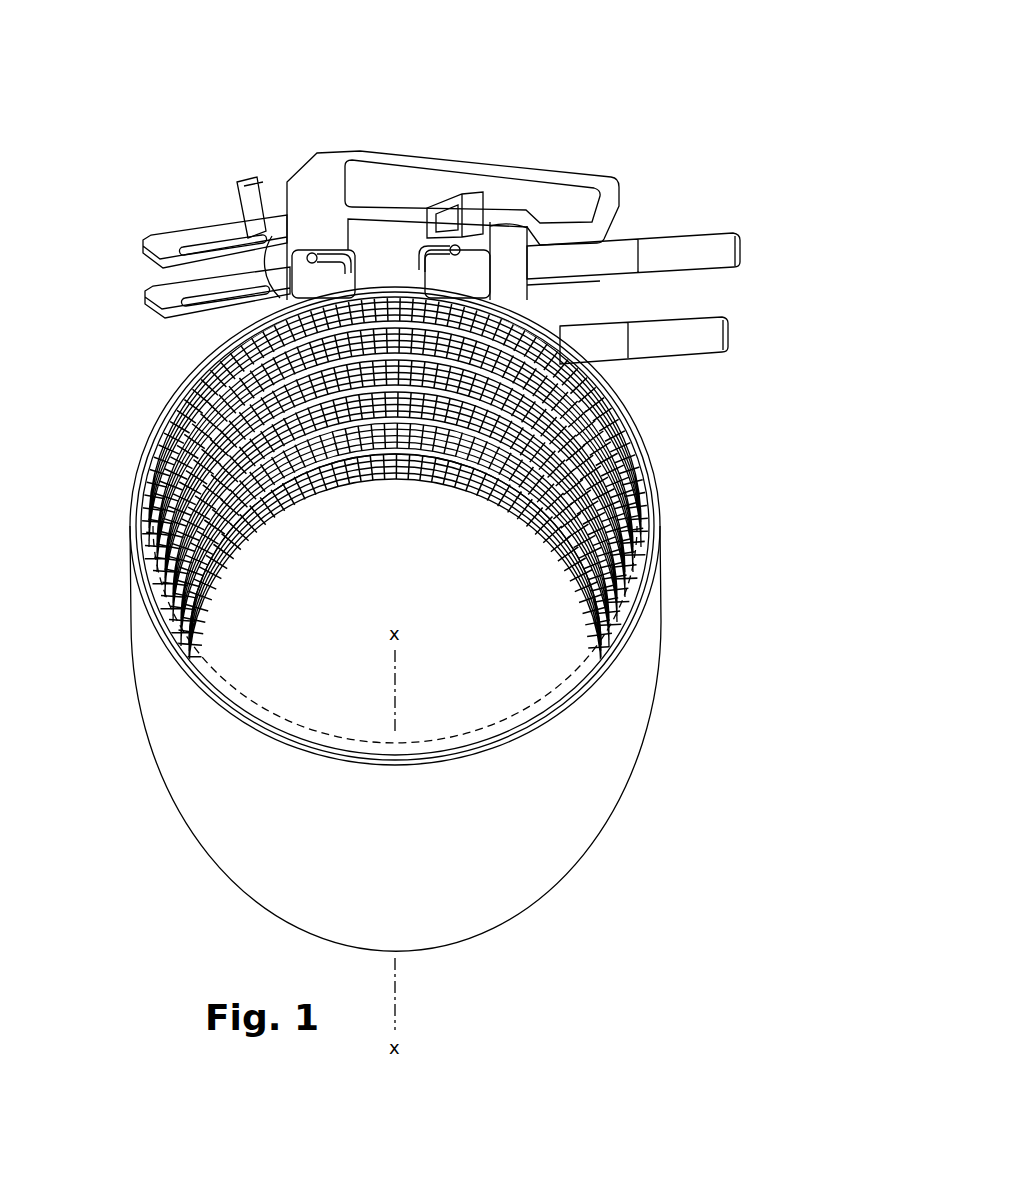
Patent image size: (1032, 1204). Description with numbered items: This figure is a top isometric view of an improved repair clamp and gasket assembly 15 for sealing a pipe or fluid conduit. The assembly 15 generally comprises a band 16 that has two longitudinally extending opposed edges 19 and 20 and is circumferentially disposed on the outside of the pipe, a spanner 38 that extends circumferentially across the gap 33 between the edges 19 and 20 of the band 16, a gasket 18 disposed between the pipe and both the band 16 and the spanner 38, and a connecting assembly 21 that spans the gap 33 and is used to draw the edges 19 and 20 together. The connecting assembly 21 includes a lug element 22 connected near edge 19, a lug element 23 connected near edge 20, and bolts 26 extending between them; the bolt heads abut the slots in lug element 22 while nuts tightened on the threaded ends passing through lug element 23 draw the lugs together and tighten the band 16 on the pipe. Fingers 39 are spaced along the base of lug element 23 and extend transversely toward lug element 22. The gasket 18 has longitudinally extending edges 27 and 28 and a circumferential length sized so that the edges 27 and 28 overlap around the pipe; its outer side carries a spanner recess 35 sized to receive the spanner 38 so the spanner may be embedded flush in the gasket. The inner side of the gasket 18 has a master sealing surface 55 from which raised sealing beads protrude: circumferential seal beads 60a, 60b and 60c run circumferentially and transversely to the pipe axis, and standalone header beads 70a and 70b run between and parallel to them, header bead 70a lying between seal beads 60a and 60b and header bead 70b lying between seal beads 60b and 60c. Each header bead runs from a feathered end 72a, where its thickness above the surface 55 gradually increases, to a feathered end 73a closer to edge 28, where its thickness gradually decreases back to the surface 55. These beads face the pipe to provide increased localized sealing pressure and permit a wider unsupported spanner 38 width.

The repair clamp and gasket assembly 15 is at (457, 218).
The band 16 is at (567, 770).
The gasket 18 is at (430, 480).
The edge 19 is at (355, 258).
The edge 20 is at (413, 257).
The connecting assembly 21 is at (196, 173).
The lug element 22 is at (298, 267).
The lug element 23 is at (472, 250).
The bolts 26 is at (693, 258).
The edge 27 is at (653, 482).
The edge 28 is at (548, 680).
The gap 33 is at (413, 268).
The spanner recess 35 is at (563, 340).
The spanner 38 is at (233, 344).
The fingers 39 is at (478, 160).
The master sealing surface 55 is at (331, 487).
The circumferential seal bead 60a is at (365, 476).
The circumferential seal bead 60b is at (288, 503).
The circumferential seal bead 60c is at (264, 512).
The standalone header bead 70a is at (500, 468).
The standalone header bead 70b is at (513, 470).
The feathered end 72a is at (218, 543).
The feathered end 73a is at (540, 510).